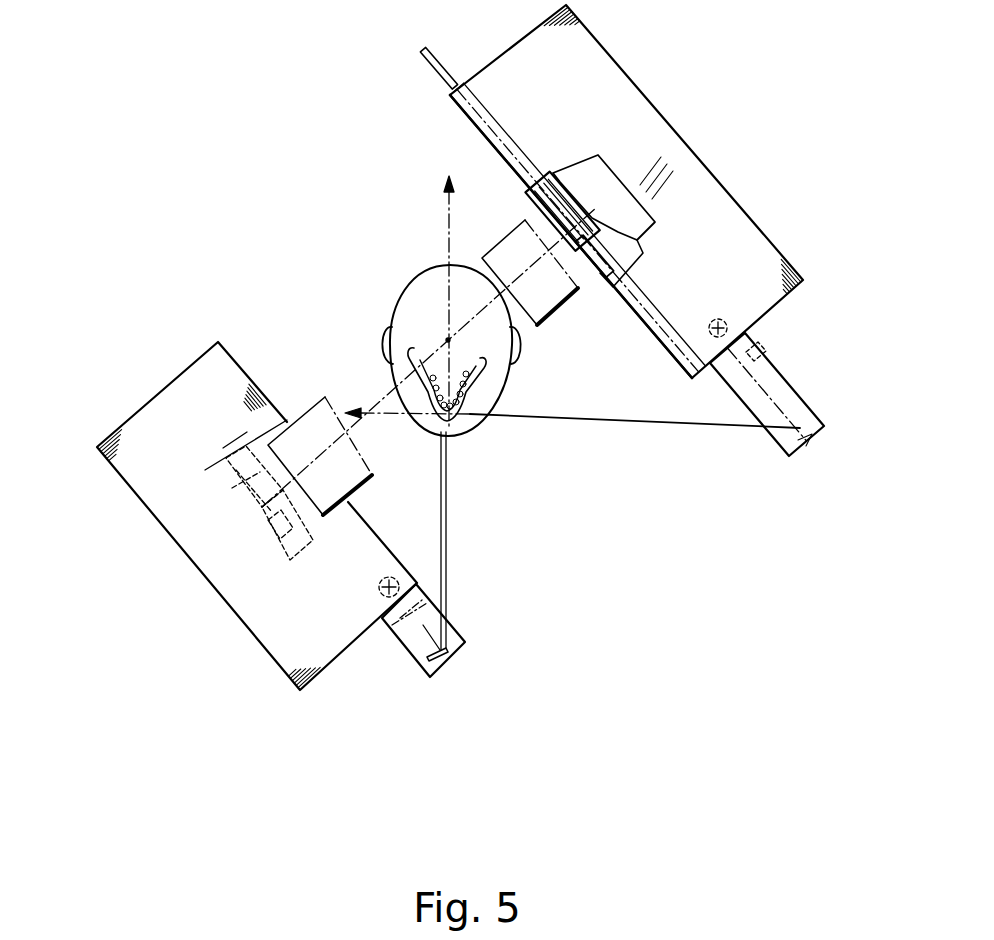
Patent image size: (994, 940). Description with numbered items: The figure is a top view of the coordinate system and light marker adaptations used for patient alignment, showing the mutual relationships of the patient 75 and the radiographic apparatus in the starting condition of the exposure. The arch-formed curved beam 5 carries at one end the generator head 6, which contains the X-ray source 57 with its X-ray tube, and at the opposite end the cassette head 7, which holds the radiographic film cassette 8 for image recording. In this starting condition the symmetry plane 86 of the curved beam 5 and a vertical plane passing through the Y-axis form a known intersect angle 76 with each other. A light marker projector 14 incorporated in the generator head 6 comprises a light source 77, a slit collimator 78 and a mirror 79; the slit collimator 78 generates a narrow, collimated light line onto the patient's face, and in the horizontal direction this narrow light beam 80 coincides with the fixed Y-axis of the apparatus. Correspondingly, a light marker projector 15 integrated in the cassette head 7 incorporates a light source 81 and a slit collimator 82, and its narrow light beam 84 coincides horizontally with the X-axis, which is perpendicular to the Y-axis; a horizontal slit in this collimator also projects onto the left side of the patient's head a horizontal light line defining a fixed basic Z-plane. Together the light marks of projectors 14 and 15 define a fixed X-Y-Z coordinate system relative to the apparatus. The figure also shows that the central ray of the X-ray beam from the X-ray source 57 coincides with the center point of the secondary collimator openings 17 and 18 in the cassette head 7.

The curved beam 5 is at (543, 315).
The generator head 6 is at (270, 630).
The cassette head 7 is at (643, 103).
The radiographic film cassette 8 is at (432, 58).
The light marker projector 14 is at (436, 668).
The light marker projector 15 is at (738, 395).
The secondary collimator opening 17 is at (588, 260).
The secondary collimator opening 18 is at (548, 214).
The X-ray source 57 is at (250, 528).
The patient 75 is at (423, 283).
The intersect angle 76 is at (442, 348).
The light source 77 is at (395, 578).
The slit collimator 78 is at (400, 625).
The mirror 79 is at (445, 650).
The narrow light beam 80 is at (450, 515).
The light source 81 is at (712, 334).
The slit collimator 82 is at (752, 356).
The narrow light beam 84 is at (650, 430).
The symmetry plane 86 is at (370, 420).